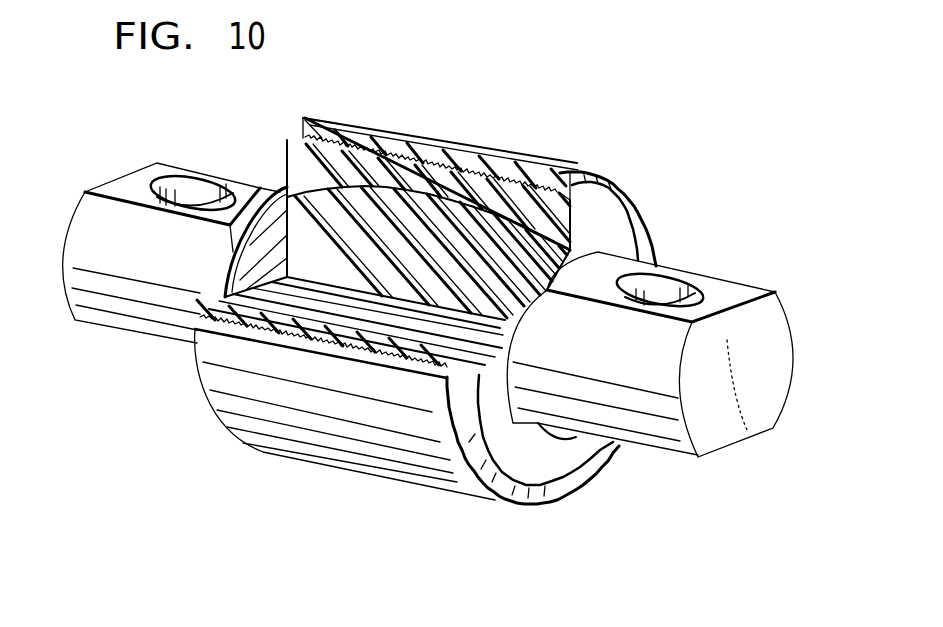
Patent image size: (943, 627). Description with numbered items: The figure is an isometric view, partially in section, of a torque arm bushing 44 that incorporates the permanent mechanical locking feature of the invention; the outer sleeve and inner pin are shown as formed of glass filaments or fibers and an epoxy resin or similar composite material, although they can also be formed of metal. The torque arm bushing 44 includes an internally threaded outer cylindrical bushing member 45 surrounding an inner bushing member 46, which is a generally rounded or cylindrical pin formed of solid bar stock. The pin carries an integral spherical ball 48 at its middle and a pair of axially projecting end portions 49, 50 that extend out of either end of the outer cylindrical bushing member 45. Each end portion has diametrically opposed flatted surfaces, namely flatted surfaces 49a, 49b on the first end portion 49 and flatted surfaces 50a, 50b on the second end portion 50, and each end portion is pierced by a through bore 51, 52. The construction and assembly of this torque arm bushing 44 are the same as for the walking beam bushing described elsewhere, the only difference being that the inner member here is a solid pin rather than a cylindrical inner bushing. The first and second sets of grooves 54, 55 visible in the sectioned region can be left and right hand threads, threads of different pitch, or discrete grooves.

The torque arm bushing 44 is at (642, 163).
The outer cylindrical bushing member 45 is at (425, 132).
The inner bushing member 46 is at (490, 270).
The spherical ball 48 is at (445, 170).
The end portion 49 is at (156, 237).
The flatted surface 49a is at (123, 188).
The flatted surface 49b is at (123, 313).
The end portion 50 is at (683, 354).
The flatted surface 50a is at (733, 290).
The flatted surface 50b is at (745, 440).
The through bore 51 is at (201, 184).
The through bore 52 is at (690, 280).
The first set of grooves 54 is at (350, 131).
The second set of grooves 55 is at (522, 170).